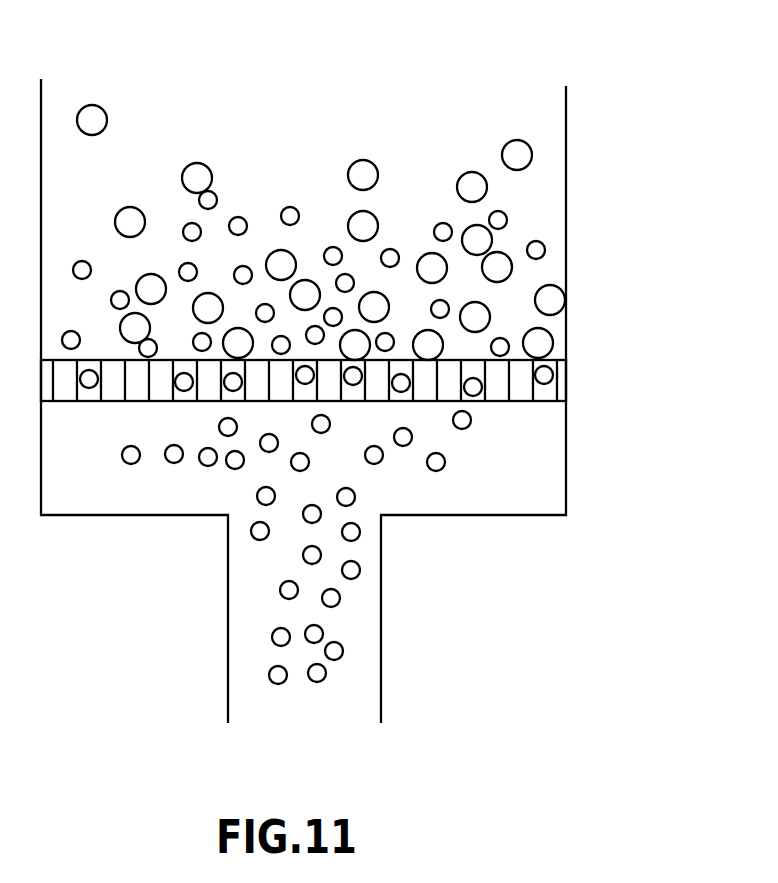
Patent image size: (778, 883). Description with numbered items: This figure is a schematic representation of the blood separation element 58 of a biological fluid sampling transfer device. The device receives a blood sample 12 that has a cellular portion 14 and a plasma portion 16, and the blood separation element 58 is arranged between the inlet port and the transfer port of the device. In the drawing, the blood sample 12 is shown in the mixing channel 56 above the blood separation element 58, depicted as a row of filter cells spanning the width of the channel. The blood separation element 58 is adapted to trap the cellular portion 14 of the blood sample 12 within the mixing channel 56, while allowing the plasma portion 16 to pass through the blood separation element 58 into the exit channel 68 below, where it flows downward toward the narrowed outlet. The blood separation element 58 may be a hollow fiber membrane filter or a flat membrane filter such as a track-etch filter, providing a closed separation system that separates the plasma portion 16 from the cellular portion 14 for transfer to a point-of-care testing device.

The blood sample 12 is at (370, 394).
The cellular portion 14 is at (532, 155).
The plasma portion 16 is at (341, 598).
The mixing channel 56 is at (241, 126).
The blood separation element 58 is at (560, 383).
The exit channel 68 is at (250, 683).